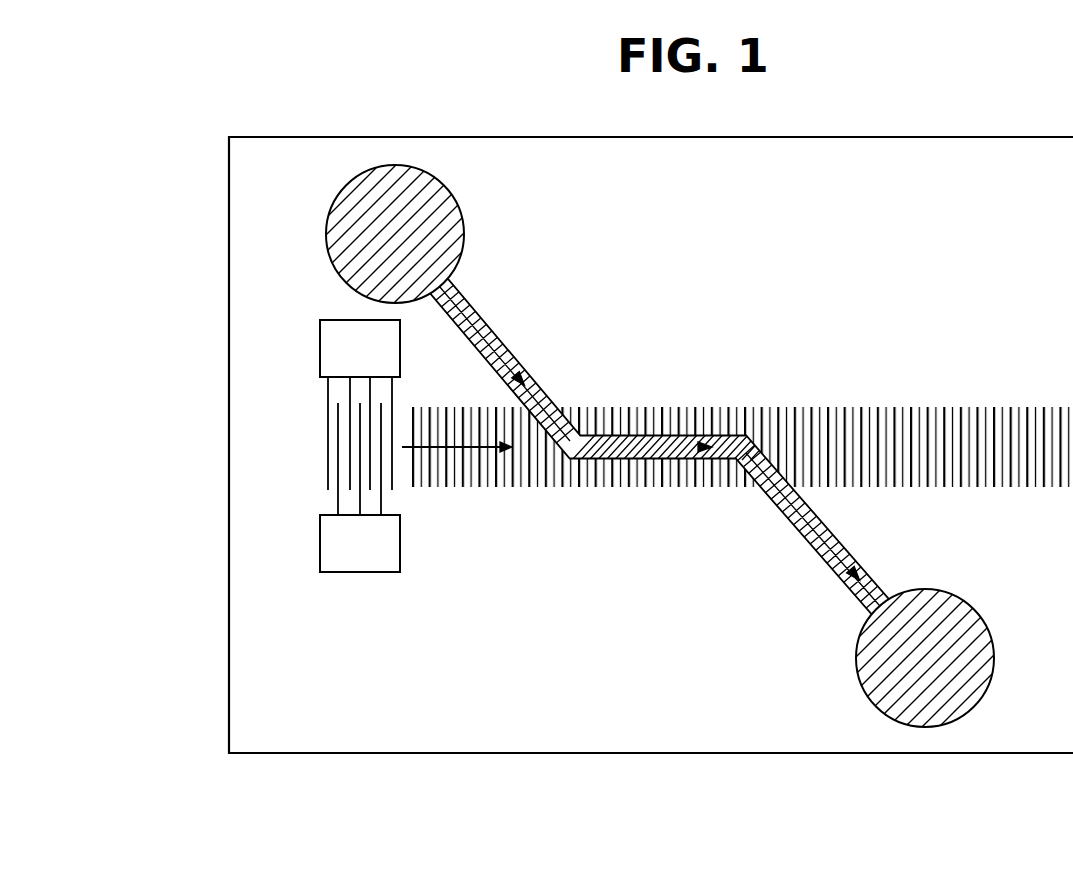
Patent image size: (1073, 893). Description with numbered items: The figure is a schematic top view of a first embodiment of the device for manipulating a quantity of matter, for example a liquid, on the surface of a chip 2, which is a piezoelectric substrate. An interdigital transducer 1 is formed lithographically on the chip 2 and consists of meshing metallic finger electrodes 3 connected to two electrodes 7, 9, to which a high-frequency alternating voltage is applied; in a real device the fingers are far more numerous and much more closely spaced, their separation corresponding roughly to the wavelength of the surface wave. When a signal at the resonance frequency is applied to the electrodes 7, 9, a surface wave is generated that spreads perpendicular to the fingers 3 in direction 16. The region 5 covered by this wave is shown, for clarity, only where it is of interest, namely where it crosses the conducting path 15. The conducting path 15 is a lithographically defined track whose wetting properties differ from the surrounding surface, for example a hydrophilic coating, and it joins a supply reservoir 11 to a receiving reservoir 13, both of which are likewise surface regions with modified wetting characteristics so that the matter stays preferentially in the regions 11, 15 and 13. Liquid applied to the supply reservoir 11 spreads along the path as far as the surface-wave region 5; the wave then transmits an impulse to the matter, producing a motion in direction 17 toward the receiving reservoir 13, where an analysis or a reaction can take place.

The interdigital transducer 1 is at (315, 608).
The chip 2 is at (1057, 160).
The finger electrodes 3 is at (305, 440).
The region covered by the surface wave 5 is at (538, 480).
The electrode 7 is at (340, 348).
The electrode 9 is at (340, 546).
The supply reservoir 11 is at (415, 170).
The receiving reservoir 13 is at (937, 712).
The conducting path 15 is at (520, 350).
The direction of the surface wave 16 is at (452, 448).
The motion of the quantity of matter 17 is at (680, 437).